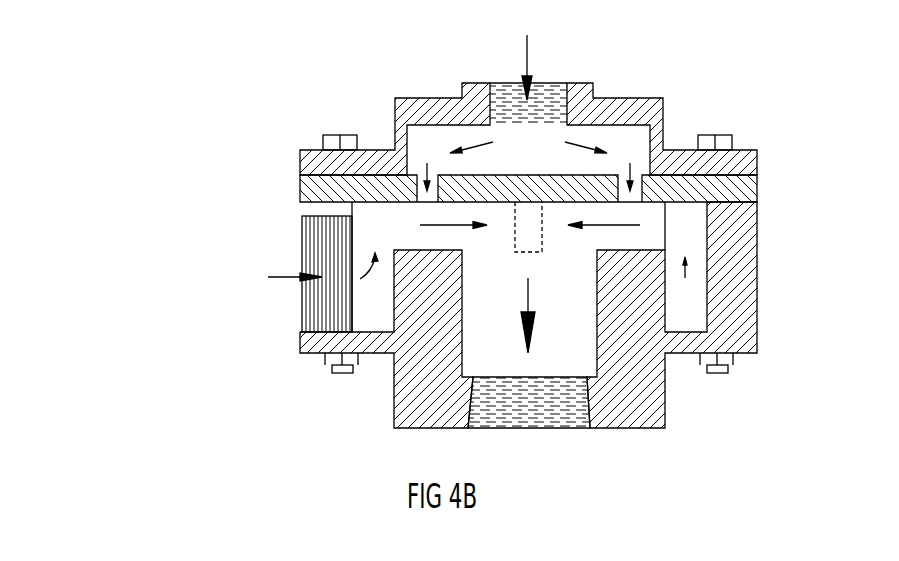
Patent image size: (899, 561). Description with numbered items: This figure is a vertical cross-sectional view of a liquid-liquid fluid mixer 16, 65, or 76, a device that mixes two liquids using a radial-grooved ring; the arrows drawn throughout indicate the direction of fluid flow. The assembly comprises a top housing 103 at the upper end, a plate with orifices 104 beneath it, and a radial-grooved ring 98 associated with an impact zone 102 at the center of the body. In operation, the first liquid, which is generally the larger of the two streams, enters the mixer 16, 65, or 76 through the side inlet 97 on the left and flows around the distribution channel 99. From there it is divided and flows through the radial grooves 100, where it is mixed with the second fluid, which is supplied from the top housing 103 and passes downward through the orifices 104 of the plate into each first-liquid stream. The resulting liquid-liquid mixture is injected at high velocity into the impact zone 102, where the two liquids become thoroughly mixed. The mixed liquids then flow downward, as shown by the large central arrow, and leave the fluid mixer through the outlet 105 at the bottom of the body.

The fluid mixer 16 is at (103, 376).
The fluid mixer 65 is at (437, 264).
The fluid mixer 76 is at (437, 264).
The side inlet 97 is at (268, 279).
The radial-grooved ring 98 is at (302, 347).
The distribution channel 99 is at (368, 216).
The radial grooves 100 is at (655, 231).
The impact zone 102 is at (565, 230).
The top housing 103 is at (536, 52).
The plate with orifices 104 is at (641, 172).
The outlet 105 is at (524, 429).